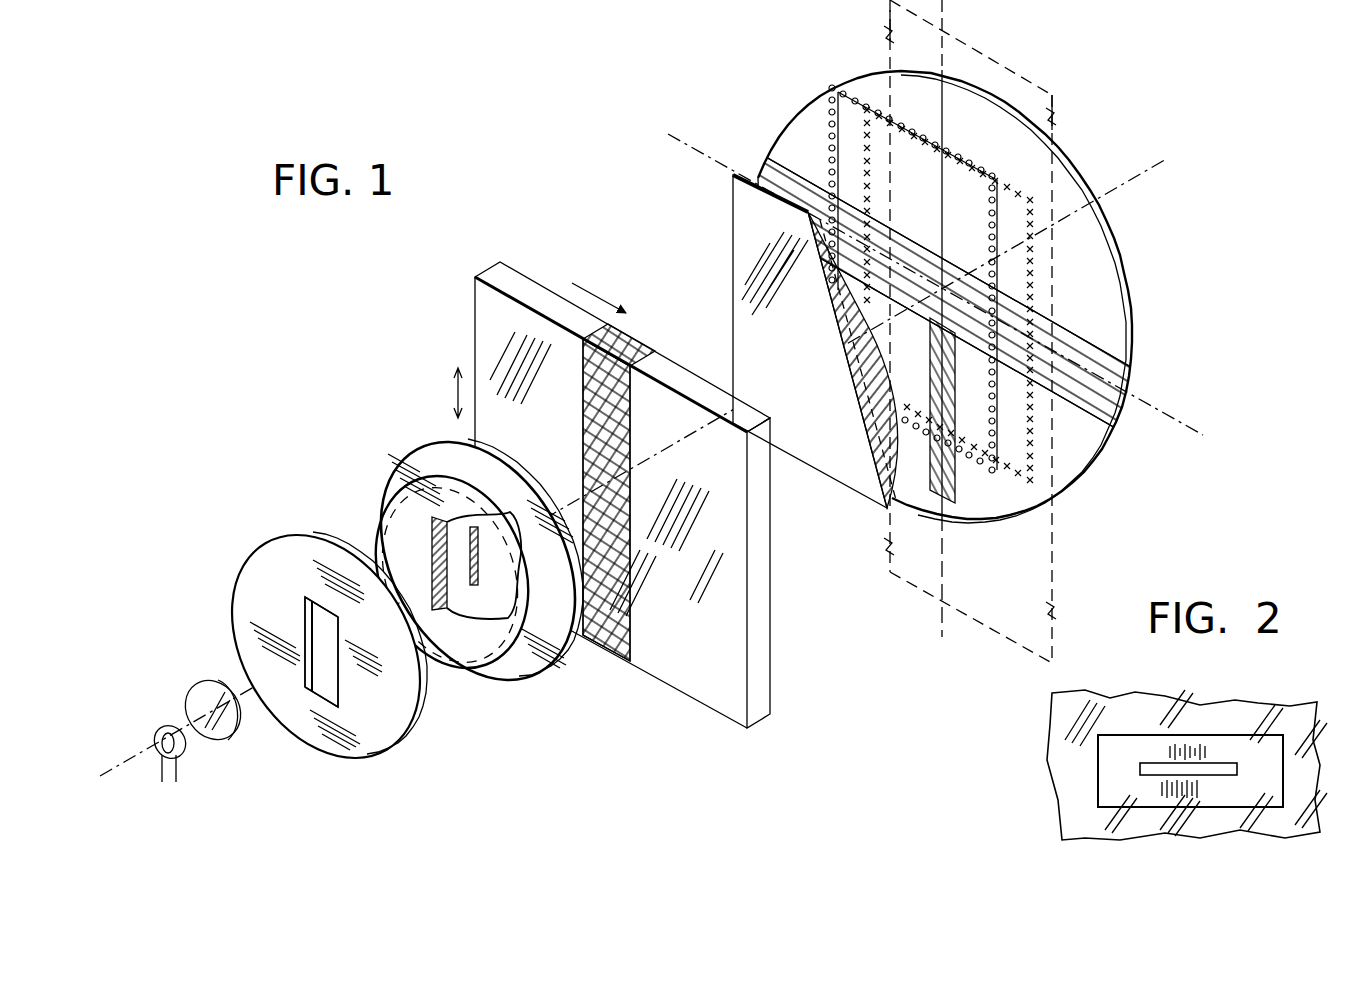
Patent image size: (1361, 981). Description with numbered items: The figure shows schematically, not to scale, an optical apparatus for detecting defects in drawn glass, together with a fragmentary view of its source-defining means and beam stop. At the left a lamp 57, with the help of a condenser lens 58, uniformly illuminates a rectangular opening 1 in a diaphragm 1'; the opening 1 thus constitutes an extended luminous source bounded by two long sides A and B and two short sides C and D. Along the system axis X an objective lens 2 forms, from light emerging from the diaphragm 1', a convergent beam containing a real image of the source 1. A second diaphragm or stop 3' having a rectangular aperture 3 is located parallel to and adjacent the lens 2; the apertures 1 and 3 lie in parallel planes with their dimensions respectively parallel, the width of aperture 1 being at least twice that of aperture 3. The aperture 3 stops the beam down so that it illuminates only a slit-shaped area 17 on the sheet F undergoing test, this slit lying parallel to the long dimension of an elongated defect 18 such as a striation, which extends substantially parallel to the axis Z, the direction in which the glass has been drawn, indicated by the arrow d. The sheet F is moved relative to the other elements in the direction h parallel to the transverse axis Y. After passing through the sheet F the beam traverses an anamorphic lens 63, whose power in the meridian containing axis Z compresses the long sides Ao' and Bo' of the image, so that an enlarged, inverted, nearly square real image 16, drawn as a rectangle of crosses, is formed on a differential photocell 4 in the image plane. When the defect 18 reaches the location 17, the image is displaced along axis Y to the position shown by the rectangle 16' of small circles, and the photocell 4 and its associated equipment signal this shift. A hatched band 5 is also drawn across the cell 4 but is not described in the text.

In FIG. 1, the opening 1 is at (343, 652).
In FIG. 2, the opening 1 is at (1190, 736).
In FIG. 1, the diaphragm 1' is at (319, 646).
In FIG. 1, the lens 2 is at (410, 513).
In FIG. 1, the aperture 3 is at (476, 553).
In FIG. 2, the aperture 3 is at (1205, 722).
In FIG. 1, the second diaphragm 3' is at (452, 554).
In FIG. 2, the second diaphragm 3' is at (1185, 737).
In FIG. 1, the differential photocell 4 is at (998, 130).
In FIG. 1, the hatched band on disc 5 is at (1080, 352).
In FIG. 1, the image 16 is at (1016, 295).
In FIG. 1, the displaced image 16' is at (987, 290).
In FIG. 1, the slit-shaped area 17 is at (580, 462).
In FIG. 1, the defect 18 is at (640, 594).
In FIG. 1, the lamp 57 is at (160, 728).
In FIG. 1, the condenser lens 58 is at (206, 692).
In FIG. 1, the anamorphic lens 63 is at (752, 320).
In FIG. 1, the long side A is at (308, 630).
In FIG. 2, the long side A is at (1110, 735).
In FIG. 1, the long side B is at (335, 665).
In FIG. 2, the long side B is at (1198, 808).
In FIG. 1, the short side C is at (310, 693).
In FIG. 2, the short side C is at (1097, 771).
In FIG. 1, the short side D is at (327, 597).
In FIG. 2, the short side D is at (1290, 757).
In FIG. 1, the sheet F is at (482, 338).
In FIG. 1, the arrow d is at (446, 393).
In FIG. 1, the direction h is at (599, 289).
In FIG. 1, the system axis X is at (638, 466).
In FIG. 1, the transverse axis Y is at (935, 287).
In FIG. 1, the axis Z is at (940, 335).
In FIG. 1, the long side of image Ao' is at (1086, 108).
In FIG. 1, the long side of image Bo' is at (856, 24).